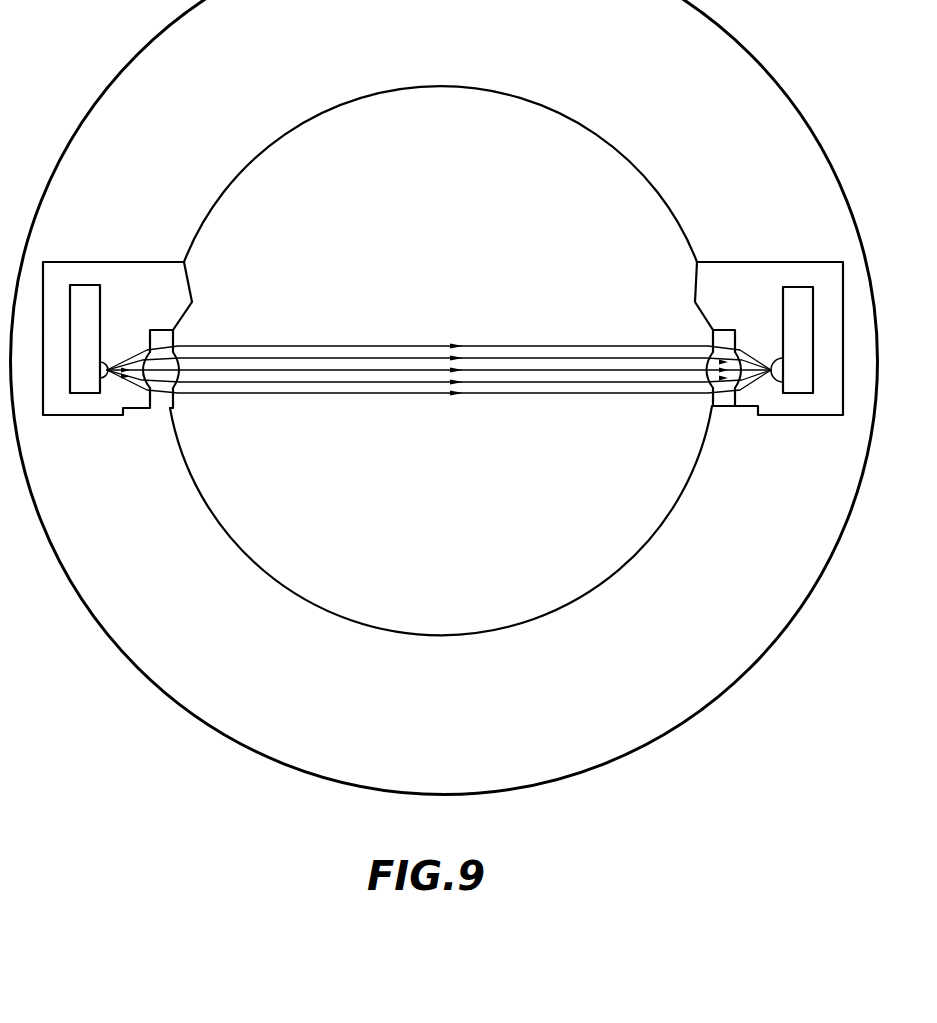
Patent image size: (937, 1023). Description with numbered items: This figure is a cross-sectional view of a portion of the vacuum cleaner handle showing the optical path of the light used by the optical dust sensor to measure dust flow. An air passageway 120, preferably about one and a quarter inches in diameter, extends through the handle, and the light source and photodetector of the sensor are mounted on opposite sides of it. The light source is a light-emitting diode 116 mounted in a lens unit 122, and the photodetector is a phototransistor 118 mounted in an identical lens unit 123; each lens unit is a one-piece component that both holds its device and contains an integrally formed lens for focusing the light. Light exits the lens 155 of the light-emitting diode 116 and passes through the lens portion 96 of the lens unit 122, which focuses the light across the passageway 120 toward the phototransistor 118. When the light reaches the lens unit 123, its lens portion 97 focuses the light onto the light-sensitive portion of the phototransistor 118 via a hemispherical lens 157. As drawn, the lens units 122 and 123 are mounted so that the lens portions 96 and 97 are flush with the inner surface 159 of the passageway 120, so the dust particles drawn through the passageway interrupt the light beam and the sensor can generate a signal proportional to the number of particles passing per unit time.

The air passageway 120 is at (638, 512).
The inner surface of passageway 159 is at (290, 590).
The lens unit 122 is at (75, 262).
The lens unit 123 is at (752, 262).
The light-emitting diode 116 is at (103, 298).
The phototransistor 118 is at (797, 290).
The lens of light-emitting diode 155 is at (105, 356).
The hemispherical lens 157 is at (777, 357).
The lens portion 96 is at (163, 342).
The lens portion 97 is at (723, 335).